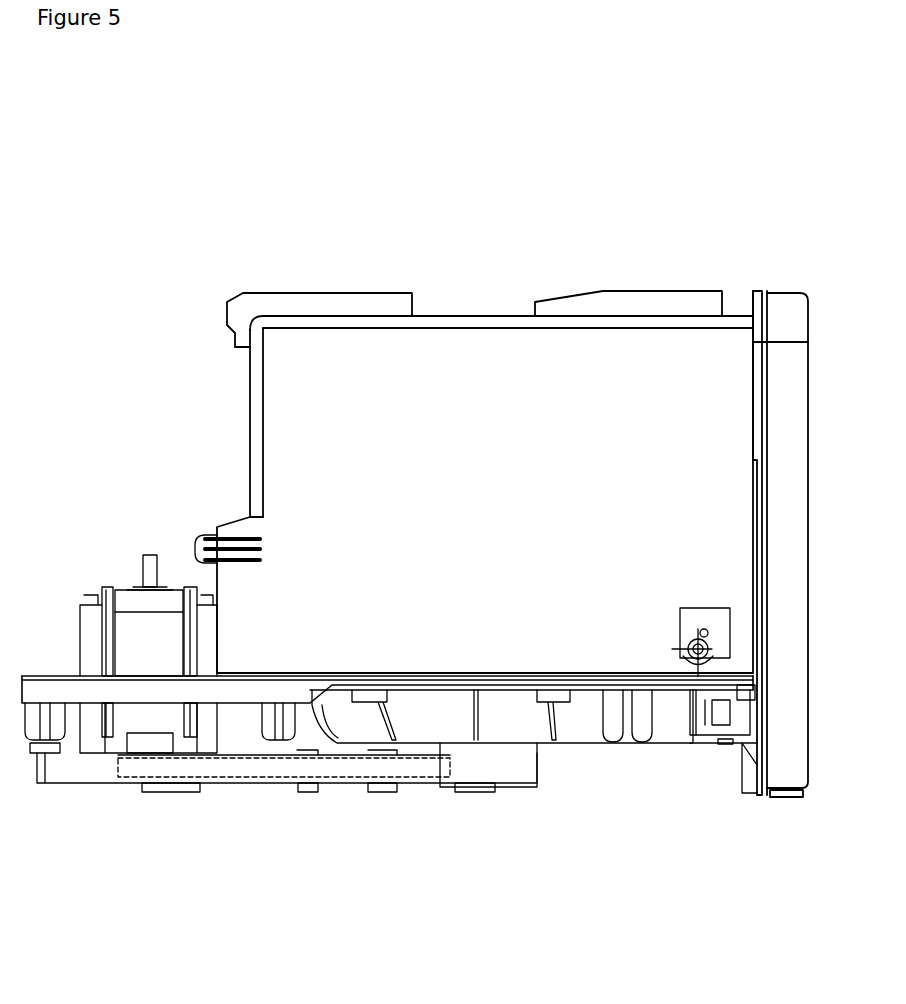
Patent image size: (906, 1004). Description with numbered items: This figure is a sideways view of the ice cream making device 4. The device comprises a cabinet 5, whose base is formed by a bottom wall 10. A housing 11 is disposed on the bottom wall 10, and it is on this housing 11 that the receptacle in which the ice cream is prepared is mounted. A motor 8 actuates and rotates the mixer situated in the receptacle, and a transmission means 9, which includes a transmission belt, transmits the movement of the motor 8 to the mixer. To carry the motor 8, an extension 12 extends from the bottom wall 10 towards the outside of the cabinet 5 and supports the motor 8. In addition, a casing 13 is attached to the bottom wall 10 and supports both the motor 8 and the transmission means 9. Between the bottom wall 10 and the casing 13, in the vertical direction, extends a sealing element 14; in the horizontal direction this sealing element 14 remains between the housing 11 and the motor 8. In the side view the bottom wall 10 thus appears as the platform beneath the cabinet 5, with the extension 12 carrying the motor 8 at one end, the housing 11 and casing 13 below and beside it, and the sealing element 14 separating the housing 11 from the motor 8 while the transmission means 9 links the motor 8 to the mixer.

The ice cream making device 4 is at (398, 208).
The cabinet 5 is at (247, 433).
The motor 8 is at (145, 625).
The transmission means 9 is at (333, 770).
The bottom wall 10 is at (479, 658).
The housing 11 is at (573, 715).
The extension 12 is at (152, 692).
The casing 13 is at (207, 780).
The sealing element 14 is at (387, 748).